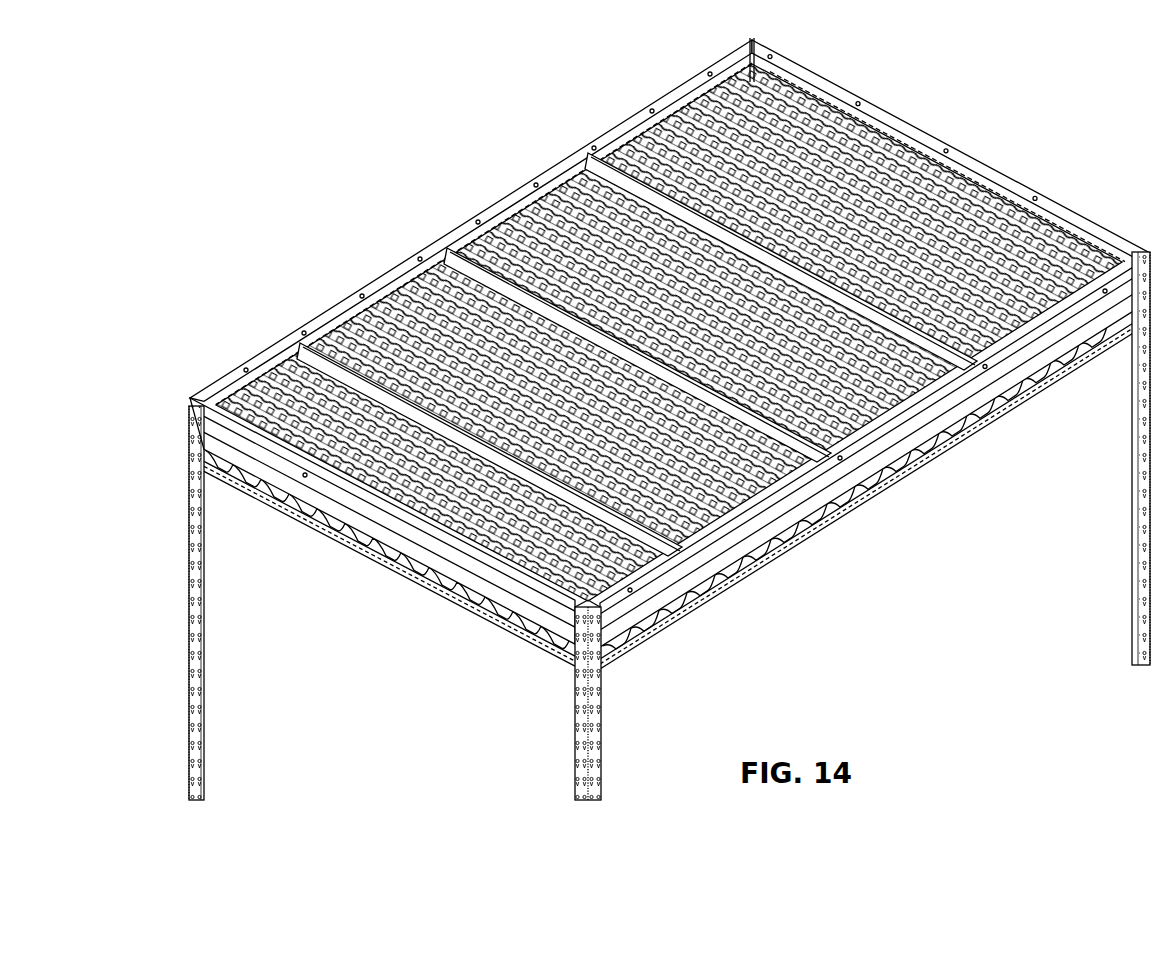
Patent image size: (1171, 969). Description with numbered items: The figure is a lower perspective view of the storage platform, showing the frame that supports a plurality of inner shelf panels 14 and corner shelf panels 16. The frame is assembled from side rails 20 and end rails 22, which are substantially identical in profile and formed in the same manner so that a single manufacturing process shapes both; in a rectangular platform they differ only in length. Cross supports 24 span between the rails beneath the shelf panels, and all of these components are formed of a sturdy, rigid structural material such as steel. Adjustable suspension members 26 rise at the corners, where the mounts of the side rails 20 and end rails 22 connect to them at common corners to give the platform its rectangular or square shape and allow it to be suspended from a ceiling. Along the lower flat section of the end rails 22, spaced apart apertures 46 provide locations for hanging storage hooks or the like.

The inner shelf panel 14 is at (955, 430).
The corner shelf panel 16 is at (1100, 340).
The side rail 20 is at (670, 108).
The end rail 22 is at (907, 121).
The cross support 24 is at (592, 152).
The adjustable suspension member 26 is at (1106, 519).
The aperture 46 is at (553, 597).